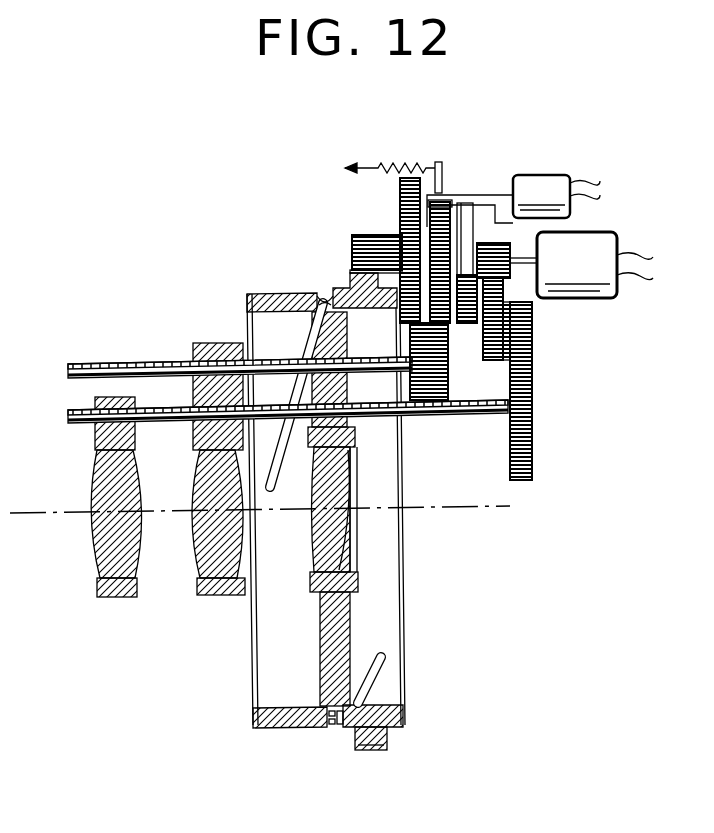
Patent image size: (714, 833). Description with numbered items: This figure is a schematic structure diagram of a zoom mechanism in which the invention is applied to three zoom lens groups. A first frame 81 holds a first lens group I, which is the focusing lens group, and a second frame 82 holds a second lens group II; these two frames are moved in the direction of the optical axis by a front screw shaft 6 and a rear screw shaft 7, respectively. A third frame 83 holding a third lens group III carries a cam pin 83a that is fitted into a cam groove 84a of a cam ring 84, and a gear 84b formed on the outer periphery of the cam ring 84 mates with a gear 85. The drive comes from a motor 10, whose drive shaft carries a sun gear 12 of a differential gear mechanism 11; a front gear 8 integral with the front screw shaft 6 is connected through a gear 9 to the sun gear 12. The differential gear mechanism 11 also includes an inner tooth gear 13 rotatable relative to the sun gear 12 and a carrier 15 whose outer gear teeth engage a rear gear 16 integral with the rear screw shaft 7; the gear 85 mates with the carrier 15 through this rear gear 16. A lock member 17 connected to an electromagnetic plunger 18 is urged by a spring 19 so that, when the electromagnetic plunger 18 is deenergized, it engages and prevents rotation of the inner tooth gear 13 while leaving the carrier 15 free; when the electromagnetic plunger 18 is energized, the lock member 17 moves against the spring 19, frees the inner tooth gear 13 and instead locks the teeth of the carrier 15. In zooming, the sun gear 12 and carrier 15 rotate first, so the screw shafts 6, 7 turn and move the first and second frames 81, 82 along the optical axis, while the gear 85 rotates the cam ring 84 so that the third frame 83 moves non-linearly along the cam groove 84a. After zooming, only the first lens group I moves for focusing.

The front screw shaft 6 is at (68, 410).
The rear screw shaft 7 is at (158, 362).
The front gear 8 is at (535, 372).
The gear 9 is at (533, 322).
The motor 10 is at (595, 250).
The differential gear mechanism 11 is at (465, 332).
The sun gear 12 is at (500, 244).
The inner tooth gear 13 is at (462, 205).
The carrier 15 is at (443, 210).
The rear gear 16 is at (418, 352).
The lock member 17 is at (493, 197).
The electromagnetic plunger 18 is at (540, 190).
The spring 19 is at (387, 162).
The first frame 81 is at (100, 435).
The second frame 82 is at (207, 430).
The third frame 83 is at (356, 437).
The cam pin 83a is at (322, 297).
The cam ring 84 is at (387, 527).
The cam groove 84a is at (273, 497).
The gear 84b is at (385, 743).
The gear 85 is at (362, 253).
The first lens group I is at (100, 537).
The second lens group II is at (210, 547).
The third lens group III is at (315, 562).